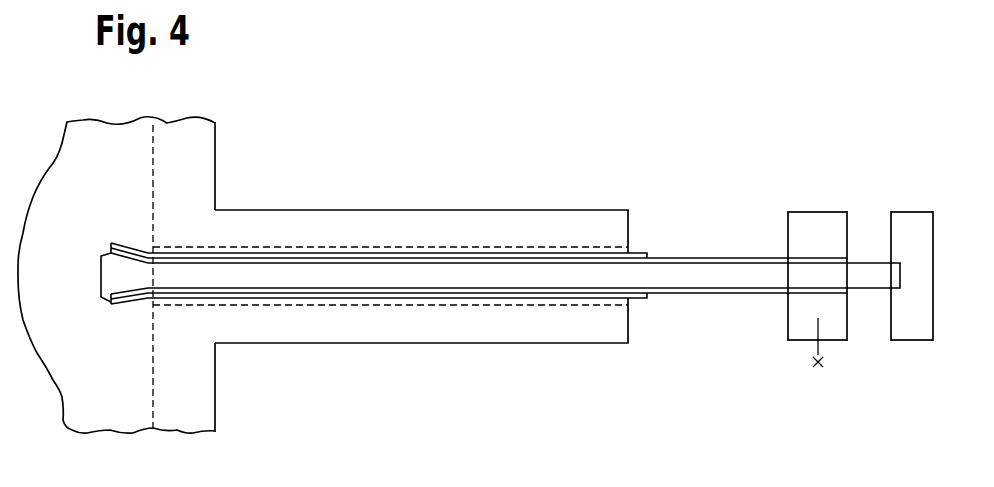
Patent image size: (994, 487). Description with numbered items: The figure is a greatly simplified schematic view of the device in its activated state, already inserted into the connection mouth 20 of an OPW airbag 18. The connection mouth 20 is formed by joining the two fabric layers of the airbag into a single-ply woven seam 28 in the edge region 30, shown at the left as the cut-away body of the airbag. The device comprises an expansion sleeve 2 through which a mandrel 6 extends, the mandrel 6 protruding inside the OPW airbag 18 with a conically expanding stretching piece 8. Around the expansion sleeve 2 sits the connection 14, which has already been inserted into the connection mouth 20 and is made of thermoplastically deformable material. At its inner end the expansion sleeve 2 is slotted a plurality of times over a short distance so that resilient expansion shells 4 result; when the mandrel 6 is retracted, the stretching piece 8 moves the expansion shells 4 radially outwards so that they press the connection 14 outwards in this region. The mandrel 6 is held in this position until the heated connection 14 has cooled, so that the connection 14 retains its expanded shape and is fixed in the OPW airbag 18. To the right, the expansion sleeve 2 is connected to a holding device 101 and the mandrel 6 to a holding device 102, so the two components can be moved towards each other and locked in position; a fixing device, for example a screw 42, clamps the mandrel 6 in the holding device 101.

The expansion sleeve 2 is at (688, 290).
The expansion shells 4 is at (118, 301).
The mandrel 6 is at (725, 277).
The stretching piece 8 is at (107, 272).
The connection 14 is at (636, 247).
The OPW airbag 18 is at (255, 372).
The connection mouth 20 is at (462, 228).
The woven seam 28 is at (193, 402).
The edge region 30 is at (193, 172).
The screw 42 is at (818, 370).
The holding device 101 is at (817, 225).
The holding device 102 is at (912, 225).